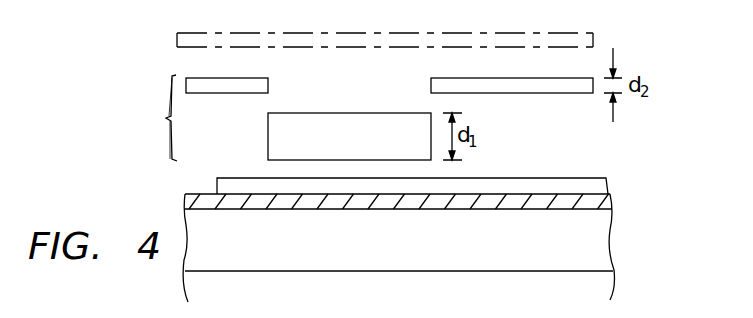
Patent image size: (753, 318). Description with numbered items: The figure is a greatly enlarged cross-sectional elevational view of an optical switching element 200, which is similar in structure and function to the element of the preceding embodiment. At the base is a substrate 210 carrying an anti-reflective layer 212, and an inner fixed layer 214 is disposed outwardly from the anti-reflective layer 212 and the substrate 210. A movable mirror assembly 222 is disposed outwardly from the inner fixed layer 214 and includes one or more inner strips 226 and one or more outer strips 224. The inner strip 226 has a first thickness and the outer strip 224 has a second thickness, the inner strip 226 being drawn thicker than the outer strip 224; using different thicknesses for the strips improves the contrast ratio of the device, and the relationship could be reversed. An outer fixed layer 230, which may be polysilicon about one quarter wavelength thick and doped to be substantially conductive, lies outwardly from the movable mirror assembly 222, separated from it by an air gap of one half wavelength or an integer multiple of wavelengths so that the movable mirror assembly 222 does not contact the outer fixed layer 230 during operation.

The optical switching element 200 is at (667, 140).
The substrate 210 is at (416, 252).
The anti-reflective layer 212 is at (613, 200).
The inner fixed layer 214 is at (512, 192).
The movable mirror assembly 222 is at (150, 118).
The outer strip 224 is at (566, 94).
The inner strip 226 is at (350, 112).
The outer fixed layer 230 is at (593, 38).